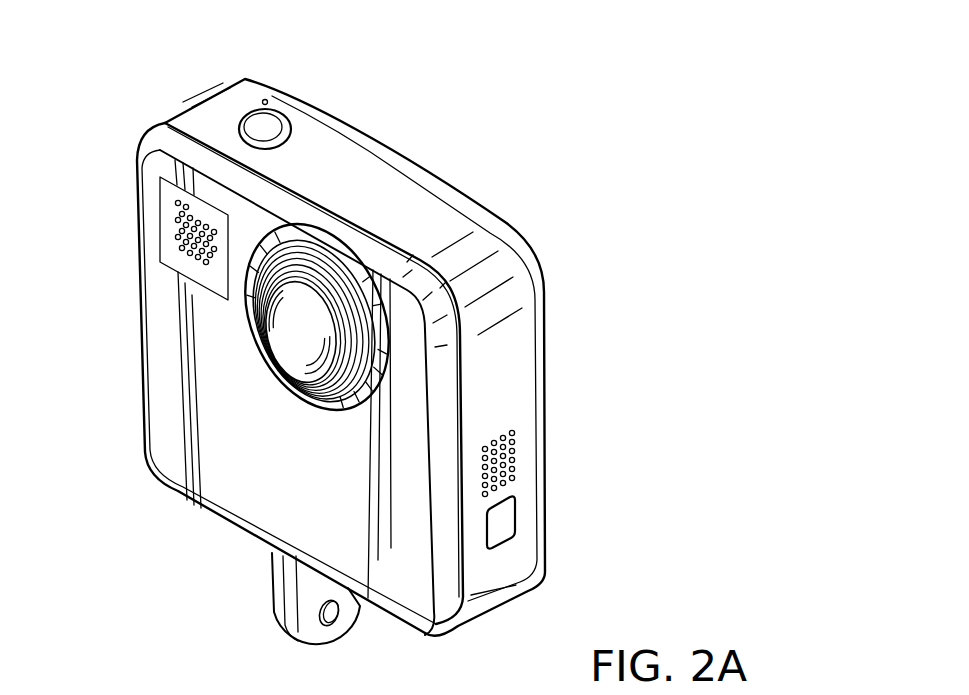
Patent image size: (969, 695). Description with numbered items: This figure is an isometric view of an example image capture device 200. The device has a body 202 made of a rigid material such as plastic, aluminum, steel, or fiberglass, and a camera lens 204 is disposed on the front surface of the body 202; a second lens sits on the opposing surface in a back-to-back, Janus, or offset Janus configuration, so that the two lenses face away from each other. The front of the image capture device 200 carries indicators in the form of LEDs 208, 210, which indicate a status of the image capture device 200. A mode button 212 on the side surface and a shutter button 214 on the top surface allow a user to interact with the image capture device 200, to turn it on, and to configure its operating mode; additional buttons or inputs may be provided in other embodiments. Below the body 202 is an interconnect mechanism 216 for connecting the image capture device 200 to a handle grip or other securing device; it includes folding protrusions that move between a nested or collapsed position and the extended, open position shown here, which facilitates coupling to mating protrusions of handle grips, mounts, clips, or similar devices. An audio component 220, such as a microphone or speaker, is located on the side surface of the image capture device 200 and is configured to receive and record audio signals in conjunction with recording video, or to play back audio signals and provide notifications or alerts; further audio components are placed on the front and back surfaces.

The image capture device 200 is at (571, 133).
The body 202 is at (140, 288).
The camera lens 204 is at (286, 354).
The LED 208 is at (175, 204).
The LED 210 is at (266, 99).
The mode button 212 is at (508, 531).
The shutter button 214 is at (277, 127).
The interconnect mechanism 216 is at (305, 594).
The audio component 220 is at (158, 188).